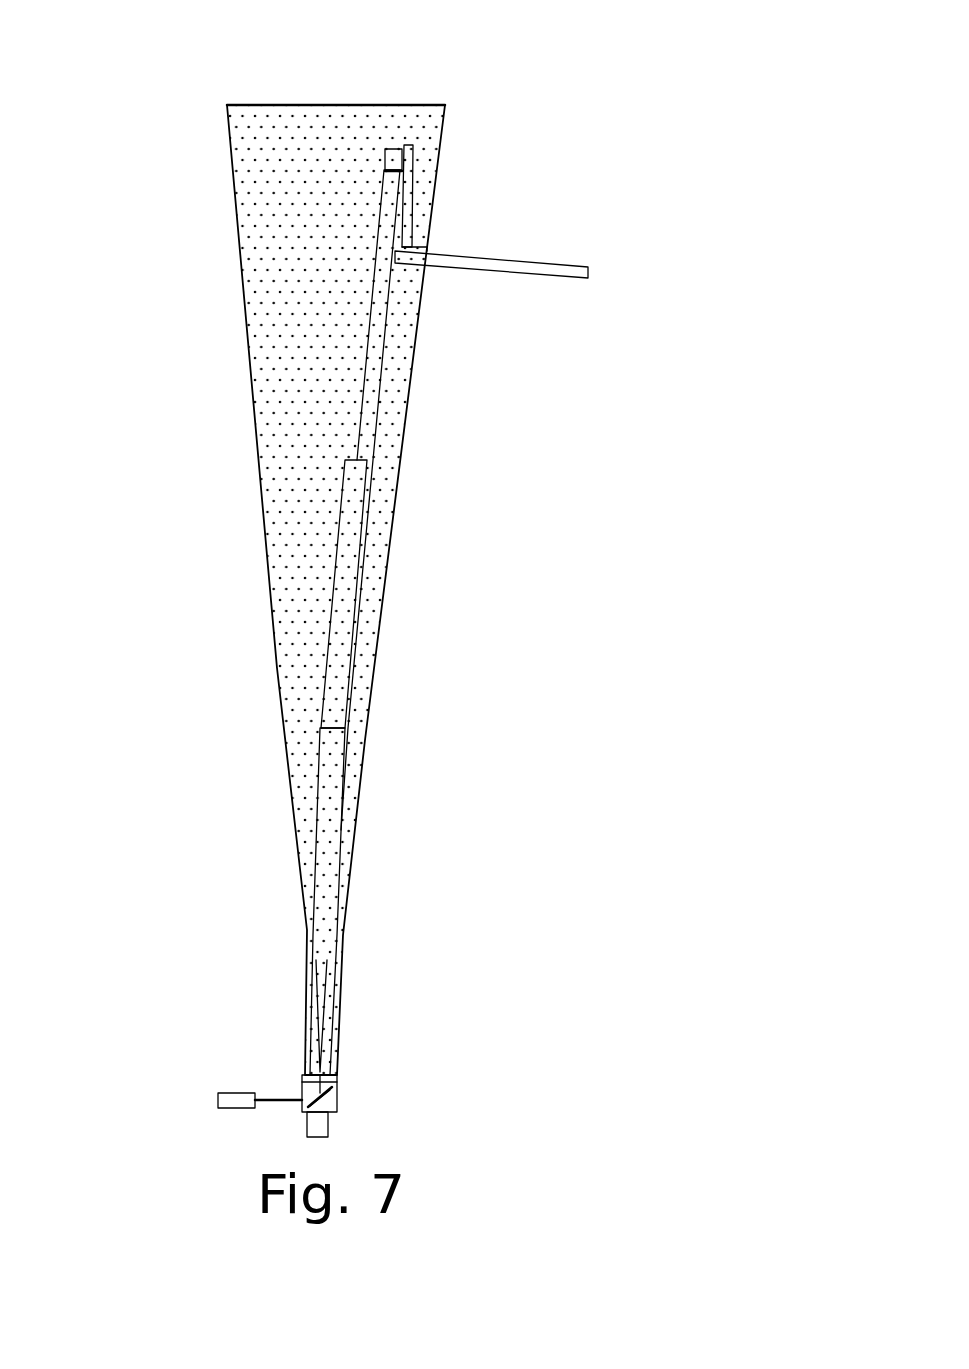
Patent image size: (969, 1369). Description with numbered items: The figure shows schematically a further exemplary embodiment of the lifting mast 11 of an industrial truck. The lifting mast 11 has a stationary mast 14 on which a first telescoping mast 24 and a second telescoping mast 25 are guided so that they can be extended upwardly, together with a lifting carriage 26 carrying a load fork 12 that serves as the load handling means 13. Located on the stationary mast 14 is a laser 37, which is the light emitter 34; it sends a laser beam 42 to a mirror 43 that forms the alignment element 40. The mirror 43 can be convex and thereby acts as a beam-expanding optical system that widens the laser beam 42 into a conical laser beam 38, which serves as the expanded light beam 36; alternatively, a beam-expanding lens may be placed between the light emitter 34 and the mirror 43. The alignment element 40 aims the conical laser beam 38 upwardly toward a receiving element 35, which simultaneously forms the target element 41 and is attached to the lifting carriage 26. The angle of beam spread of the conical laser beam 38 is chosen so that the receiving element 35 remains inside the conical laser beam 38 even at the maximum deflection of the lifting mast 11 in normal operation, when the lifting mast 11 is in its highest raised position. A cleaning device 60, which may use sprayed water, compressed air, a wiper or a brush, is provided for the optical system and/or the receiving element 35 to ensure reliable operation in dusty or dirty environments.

The lifting mast 11 is at (248, 156).
The load fork 12 is at (511, 238).
The load handling means 13 is at (556, 265).
The stationary mast 14 is at (328, 860).
The first telescoping mast 24 is at (355, 506).
The second telescoping mast 25 is at (373, 368).
The lifting carriage 26 is at (413, 172).
The light emitter 34 is at (191, 1066).
The receiving element 35 is at (411, 107).
The expanded light beam 36 is at (303, 590).
The laser 37 is at (224, 1094).
The conical laser beam 38 is at (280, 668).
The alignment element 40 is at (303, 1087).
The target element 41 is at (398, 147).
The laser beam 42 is at (278, 1104).
The mirror 43 is at (283, 1071).
The cleaning device 60 is at (337, 1080).